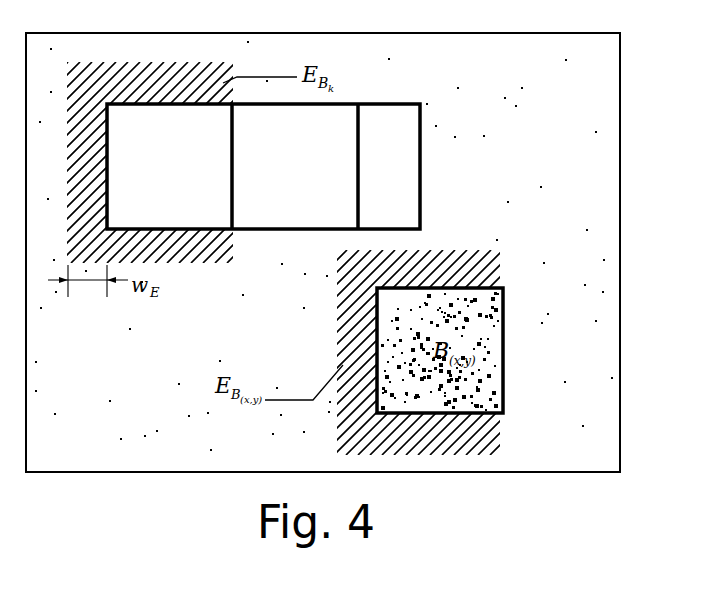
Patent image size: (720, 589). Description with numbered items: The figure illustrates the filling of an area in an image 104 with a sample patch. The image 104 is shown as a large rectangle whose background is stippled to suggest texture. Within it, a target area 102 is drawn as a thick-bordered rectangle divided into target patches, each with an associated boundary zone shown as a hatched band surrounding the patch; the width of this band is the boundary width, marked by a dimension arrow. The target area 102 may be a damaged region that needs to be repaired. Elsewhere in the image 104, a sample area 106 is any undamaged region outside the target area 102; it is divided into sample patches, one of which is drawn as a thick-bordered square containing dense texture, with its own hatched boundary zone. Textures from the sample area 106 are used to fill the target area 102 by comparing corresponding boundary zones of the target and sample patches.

The target area 102 is at (408, 101).
The image 104 is at (584, 33).
The sample area 106 is at (595, 302).